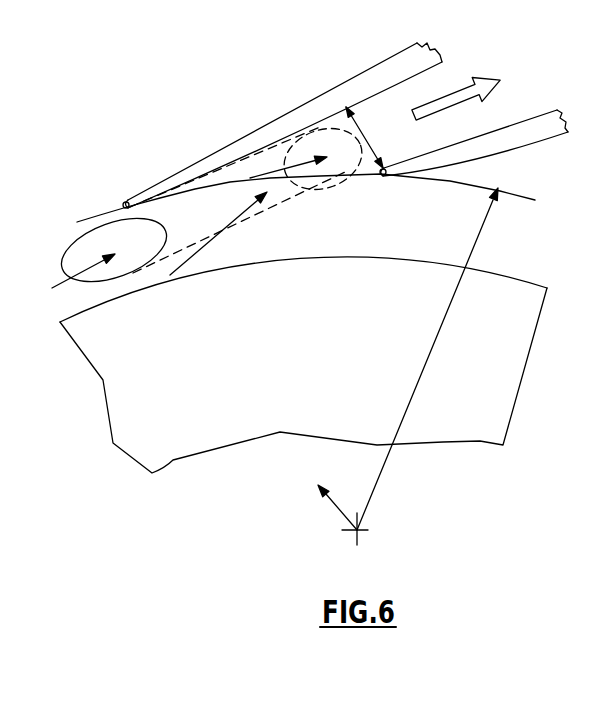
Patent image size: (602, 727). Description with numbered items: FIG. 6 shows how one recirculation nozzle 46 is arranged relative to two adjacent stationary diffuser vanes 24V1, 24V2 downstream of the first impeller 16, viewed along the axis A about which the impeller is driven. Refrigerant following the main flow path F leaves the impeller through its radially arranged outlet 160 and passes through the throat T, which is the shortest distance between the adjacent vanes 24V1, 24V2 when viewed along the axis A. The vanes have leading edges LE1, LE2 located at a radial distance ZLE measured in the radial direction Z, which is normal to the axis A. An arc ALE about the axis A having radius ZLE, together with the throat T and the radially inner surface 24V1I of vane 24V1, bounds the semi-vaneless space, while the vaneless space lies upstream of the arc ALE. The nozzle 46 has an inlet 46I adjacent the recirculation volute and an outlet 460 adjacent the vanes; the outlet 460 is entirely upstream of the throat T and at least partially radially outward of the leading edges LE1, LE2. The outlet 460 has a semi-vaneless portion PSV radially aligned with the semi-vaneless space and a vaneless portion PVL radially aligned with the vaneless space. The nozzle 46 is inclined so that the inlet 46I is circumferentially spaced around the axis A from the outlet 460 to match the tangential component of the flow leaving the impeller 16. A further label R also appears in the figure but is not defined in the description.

The first impeller 16 is at (309, 353).
The outlet of the first impeller 160 is at (358, 259).
The recirculation nozzle 46 is at (95, 222).
The first adjacent vane 24V1 is at (398, 53).
The second adjacent vane 24V2 is at (507, 145).
The radially inner surface of the first vane 24V1I is at (318, 135).
The leading edge of the first vane LE1 is at (124, 204).
The leading edge of the second vane LE2 is at (381, 180).
The semi-vaneless portion PSV is at (332, 142).
The vaneless portion PVL is at (313, 180).
The outlet of the recirculation nozzle 460 is at (352, 162).
The inlet of the recirculation nozzle 46I is at (111, 270).
The throat T is at (366, 134).
The main refrigerant flow path F is at (463, 83).
The radial direction R is at (283, 173).
The arc about the axis ALE is at (205, 190).
The radial distance of the leading edges ZLE is at (479, 237).
The radial direction Z is at (333, 514).
The axis A is at (362, 524).